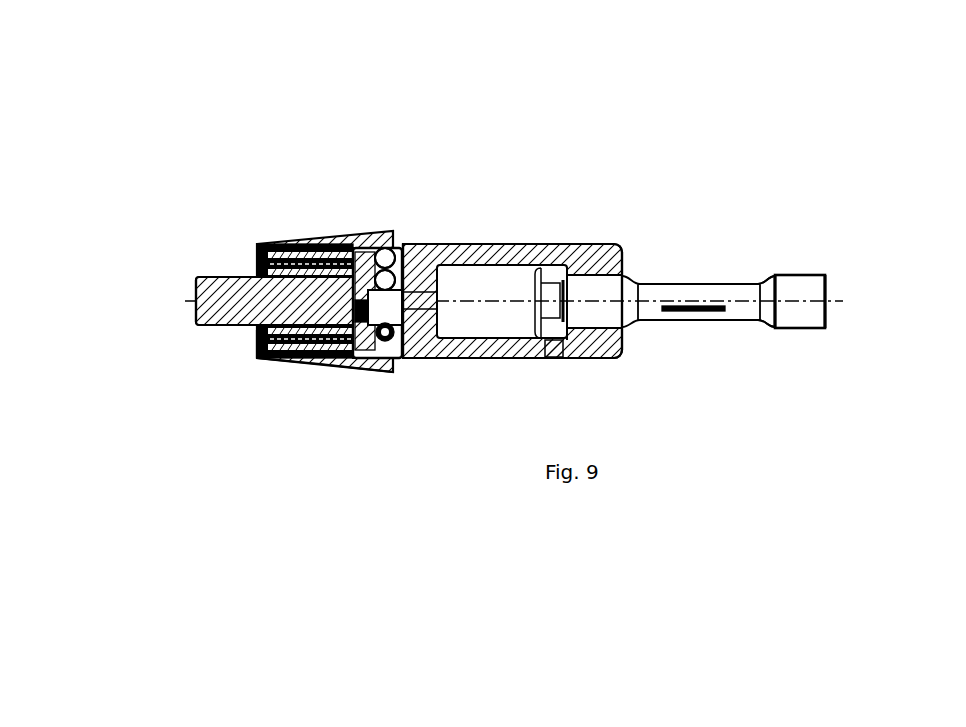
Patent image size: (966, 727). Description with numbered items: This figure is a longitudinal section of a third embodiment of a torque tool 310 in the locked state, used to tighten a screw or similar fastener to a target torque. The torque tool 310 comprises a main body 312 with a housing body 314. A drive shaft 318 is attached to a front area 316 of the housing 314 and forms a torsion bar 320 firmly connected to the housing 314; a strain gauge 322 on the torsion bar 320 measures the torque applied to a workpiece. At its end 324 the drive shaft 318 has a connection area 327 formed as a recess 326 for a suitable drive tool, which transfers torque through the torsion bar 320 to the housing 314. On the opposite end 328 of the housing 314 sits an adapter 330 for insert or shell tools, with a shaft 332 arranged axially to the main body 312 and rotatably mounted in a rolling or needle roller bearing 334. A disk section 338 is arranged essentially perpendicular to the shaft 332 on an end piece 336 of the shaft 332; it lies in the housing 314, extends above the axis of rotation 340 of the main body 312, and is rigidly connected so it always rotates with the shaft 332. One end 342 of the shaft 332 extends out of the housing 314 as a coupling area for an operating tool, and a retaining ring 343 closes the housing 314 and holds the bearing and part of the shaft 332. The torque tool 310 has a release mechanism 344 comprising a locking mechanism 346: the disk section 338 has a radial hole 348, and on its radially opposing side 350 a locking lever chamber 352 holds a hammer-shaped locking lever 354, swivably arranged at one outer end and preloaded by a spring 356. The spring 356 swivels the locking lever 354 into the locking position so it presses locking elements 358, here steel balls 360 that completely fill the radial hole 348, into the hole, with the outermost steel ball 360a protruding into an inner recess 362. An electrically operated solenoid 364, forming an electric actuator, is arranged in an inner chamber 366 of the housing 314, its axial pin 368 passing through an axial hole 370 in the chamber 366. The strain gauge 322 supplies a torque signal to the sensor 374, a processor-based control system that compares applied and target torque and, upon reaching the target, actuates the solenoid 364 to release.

The torque tool 310 is at (514, 193).
The main body 312 is at (427, 279).
The housing body 314 is at (641, 244).
The front area 316 is at (641, 275).
The drive shaft 318 is at (710, 276).
The torsion bar 320 is at (810, 330).
The strain gauge 322 is at (722, 351).
The end of the drive shaft 324 is at (851, 272).
The recess 326 is at (856, 316).
The connection area 327 is at (890, 301).
The end of the housing 328 is at (230, 397).
The adapter 330 is at (427, 275).
The shaft 332 is at (180, 342).
The needle roller bearing 334 is at (278, 416).
The end piece 336 is at (293, 234).
The disk section 338 is at (295, 256).
The axis of rotation 340 is at (427, 305).
The end of the shaft 342 is at (145, 261).
The retaining ring 343 is at (190, 365).
The release mechanism 344 is at (449, 234).
The locking mechanism 346 is at (319, 416).
The radial hole 348 is at (448, 217).
The radially opposing side 350 is at (350, 407).
The locking lever chamber 352 is at (418, 420).
The locking lever 354 is at (427, 349).
The spring 356 is at (285, 377).
The locking elements 358 is at (318, 203).
The steel balls 360 is at (417, 173).
The outermost steel ball 360a is at (324, 174).
The inner recess 362 is at (425, 208).
The solenoid 364 is at (506, 337).
The inner chamber 366 is at (508, 221).
The axial pin 368 is at (453, 276).
The axial hole 370 is at (508, 401).
The sensor 374 is at (427, 317).